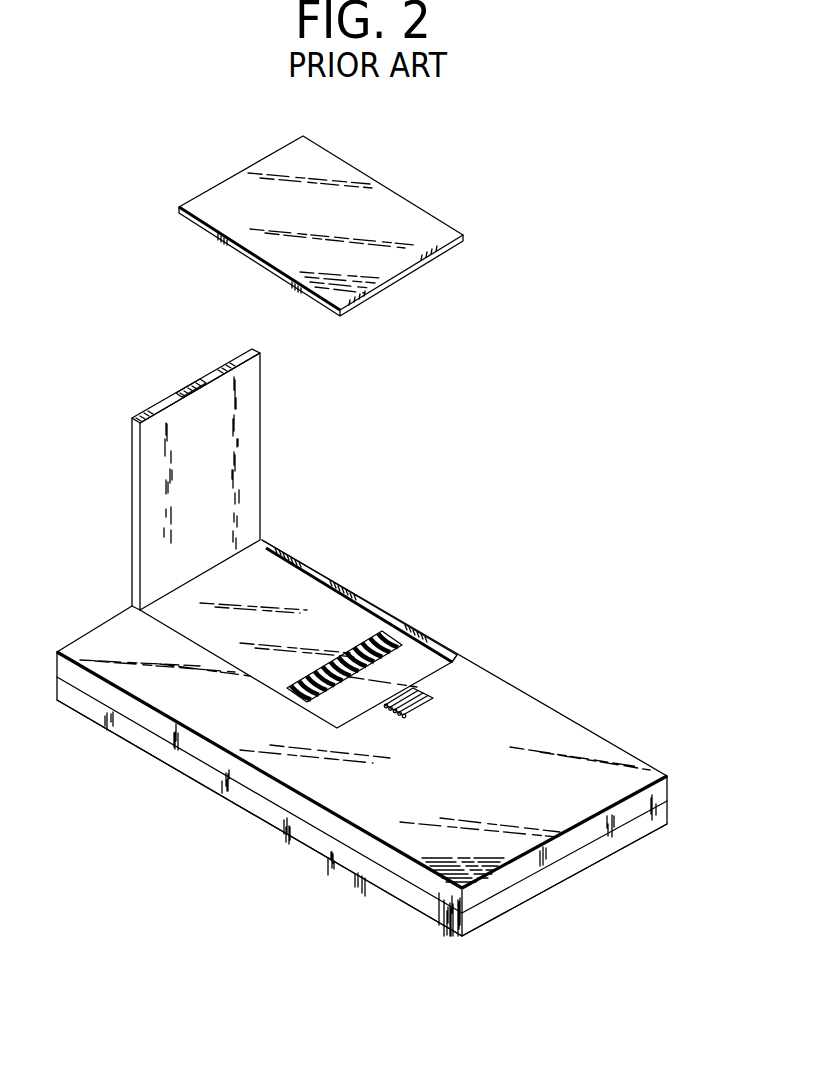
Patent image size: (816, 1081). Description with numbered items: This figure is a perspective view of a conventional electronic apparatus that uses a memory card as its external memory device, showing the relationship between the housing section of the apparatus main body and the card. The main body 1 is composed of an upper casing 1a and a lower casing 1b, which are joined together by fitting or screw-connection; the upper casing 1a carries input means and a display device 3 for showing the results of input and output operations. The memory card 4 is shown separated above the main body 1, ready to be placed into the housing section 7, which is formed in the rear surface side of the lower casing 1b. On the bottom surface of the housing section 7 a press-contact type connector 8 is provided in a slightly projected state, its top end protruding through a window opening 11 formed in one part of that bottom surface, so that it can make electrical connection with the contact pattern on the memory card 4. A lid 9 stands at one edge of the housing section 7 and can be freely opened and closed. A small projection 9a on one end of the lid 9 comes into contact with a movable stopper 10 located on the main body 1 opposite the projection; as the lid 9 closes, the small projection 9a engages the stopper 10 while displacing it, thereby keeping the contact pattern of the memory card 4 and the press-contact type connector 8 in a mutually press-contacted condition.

The main body 1 is at (290, 889).
The upper casing 1a is at (243, 800).
The lower casing 1b is at (280, 797).
The display device 3 is at (123, 542).
The memory card 4 is at (437, 217).
The housing section 7 is at (322, 608).
The press-contact type connector 8 is at (371, 636).
The lid 9 is at (265, 460).
The small projection 9a is at (188, 391).
The movable stopper 10 is at (420, 687).
The window opening 11 is at (372, 666).